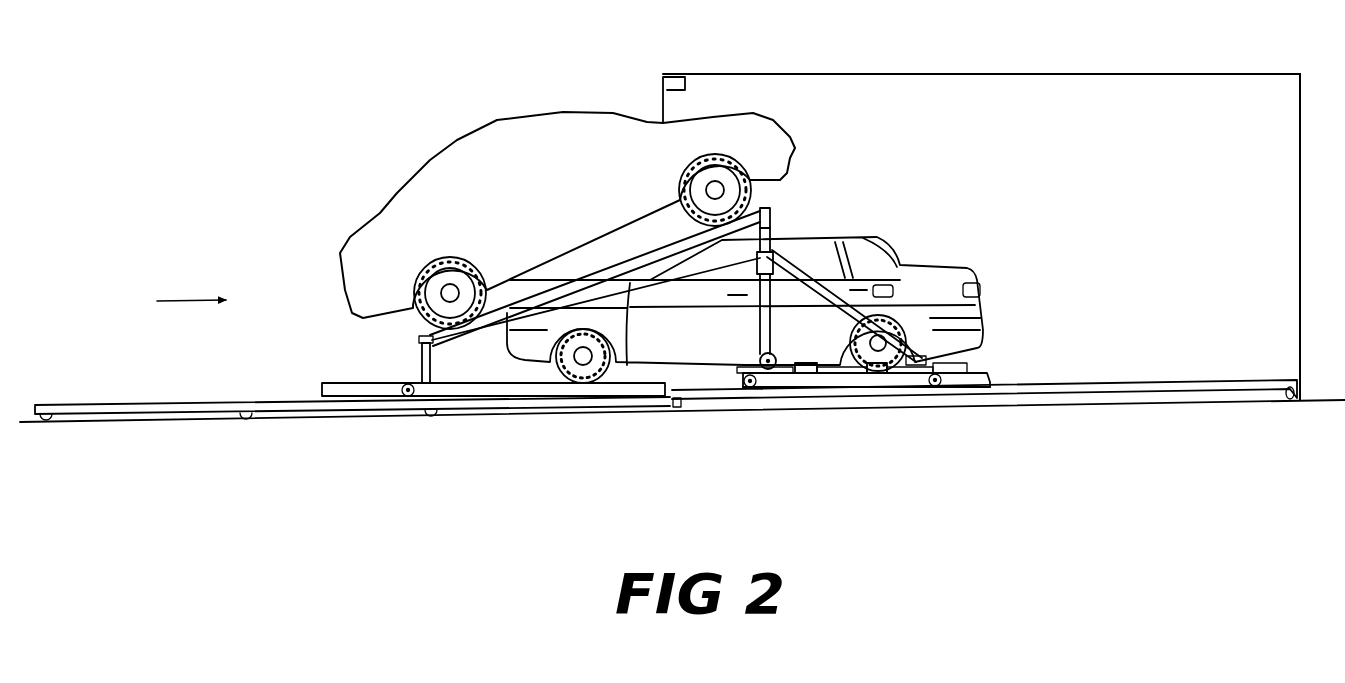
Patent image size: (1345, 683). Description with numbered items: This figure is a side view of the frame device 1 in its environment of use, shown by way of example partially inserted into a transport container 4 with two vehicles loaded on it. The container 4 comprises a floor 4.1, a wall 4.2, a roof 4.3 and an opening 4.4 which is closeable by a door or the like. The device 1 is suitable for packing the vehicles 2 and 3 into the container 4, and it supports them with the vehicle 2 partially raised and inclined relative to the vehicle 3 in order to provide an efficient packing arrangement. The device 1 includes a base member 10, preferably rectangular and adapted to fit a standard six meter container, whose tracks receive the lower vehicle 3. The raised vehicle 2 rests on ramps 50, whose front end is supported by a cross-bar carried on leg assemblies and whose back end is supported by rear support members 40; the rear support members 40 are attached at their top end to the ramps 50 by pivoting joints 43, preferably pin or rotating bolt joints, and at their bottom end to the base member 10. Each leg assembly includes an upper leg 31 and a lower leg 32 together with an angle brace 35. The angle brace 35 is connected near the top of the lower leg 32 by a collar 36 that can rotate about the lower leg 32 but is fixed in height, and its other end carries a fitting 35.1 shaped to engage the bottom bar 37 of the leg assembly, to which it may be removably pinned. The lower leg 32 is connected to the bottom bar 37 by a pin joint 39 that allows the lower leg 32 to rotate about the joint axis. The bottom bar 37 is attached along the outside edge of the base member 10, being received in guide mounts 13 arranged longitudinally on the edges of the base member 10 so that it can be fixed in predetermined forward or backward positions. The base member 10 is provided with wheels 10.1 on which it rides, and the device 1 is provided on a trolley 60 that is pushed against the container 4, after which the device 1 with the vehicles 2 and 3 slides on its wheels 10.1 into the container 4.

The device 1 is at (782, 206).
The vehicle 2 is at (530, 140).
The vehicle 3 is at (915, 268).
The transport container 4 is at (915, 74).
The floor 4.1 is at (1125, 385).
The wall 4.2 is at (1335, 266).
The roof 4.3 is at (1103, 74).
The opening 4.4 is at (687, 100).
The base member 10 is at (530, 385).
The wheels 10.1 is at (743, 386).
The guide mounts 13 is at (870, 377).
The upper legs 31 is at (778, 218).
The lower legs 32 is at (762, 335).
The angle braces 35 is at (920, 340).
The fitting 35.1 is at (957, 357).
The collar 36 is at (758, 265).
The bottom bar 37 is at (963, 388).
The pin joint 39 is at (752, 362).
The rear support members 40 is at (430, 362).
The pivoting joints 43 is at (410, 337).
The ramps 50 is at (610, 268).
The trolley 60 is at (223, 412).